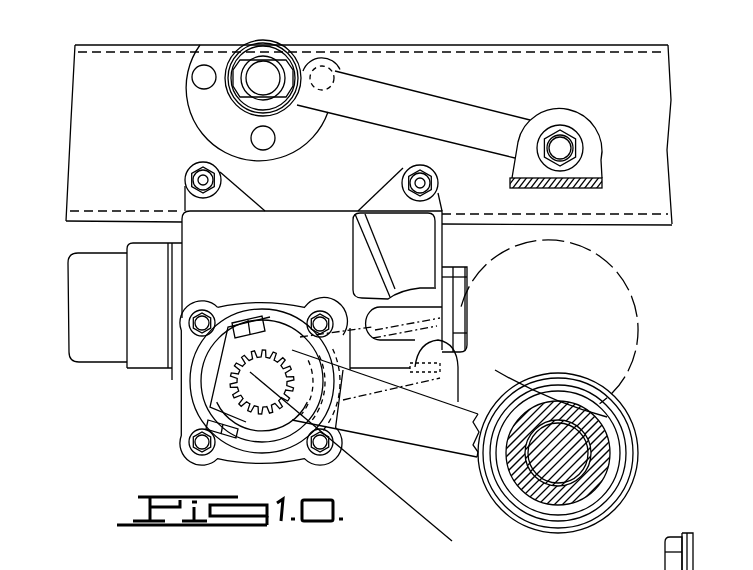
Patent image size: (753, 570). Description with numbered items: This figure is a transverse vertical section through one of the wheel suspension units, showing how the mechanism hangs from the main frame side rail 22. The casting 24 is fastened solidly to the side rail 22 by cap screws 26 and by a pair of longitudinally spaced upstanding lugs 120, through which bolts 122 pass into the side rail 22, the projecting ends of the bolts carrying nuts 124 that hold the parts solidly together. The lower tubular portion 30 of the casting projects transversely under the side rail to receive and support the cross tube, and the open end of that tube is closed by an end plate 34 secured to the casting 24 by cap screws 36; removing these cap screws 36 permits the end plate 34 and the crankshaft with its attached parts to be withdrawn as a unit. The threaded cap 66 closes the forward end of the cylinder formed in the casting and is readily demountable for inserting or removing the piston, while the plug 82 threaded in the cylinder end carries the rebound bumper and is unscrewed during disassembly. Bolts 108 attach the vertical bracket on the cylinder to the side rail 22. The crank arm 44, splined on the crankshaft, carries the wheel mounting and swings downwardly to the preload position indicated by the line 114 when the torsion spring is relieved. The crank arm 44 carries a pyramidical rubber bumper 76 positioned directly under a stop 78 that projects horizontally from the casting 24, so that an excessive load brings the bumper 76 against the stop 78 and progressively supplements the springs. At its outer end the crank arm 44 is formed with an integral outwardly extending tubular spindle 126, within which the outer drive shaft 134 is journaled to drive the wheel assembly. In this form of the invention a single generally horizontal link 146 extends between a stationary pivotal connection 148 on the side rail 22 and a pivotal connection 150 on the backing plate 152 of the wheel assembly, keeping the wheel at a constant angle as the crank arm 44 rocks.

The main frame side rail 22 is at (418, 52).
The casting 24 is at (291, 207).
The cap screws 26 is at (250, 249).
The lower tubular portion 30 is at (185, 400).
The end plate 34 is at (200, 345).
The cap screws 36 is at (203, 316).
The crank arm 44 is at (388, 435).
The threaded cap 66 is at (86, 280).
The rubber bumper 76 is at (450, 380).
The stop 78 is at (415, 262).
The plug 82 is at (468, 279).
The bolts 108 is at (664, 552).
The line 114 is at (372, 463).
The lugs 120 is at (183, 201).
The bolts 122 is at (193, 178).
The nuts 124 is at (200, 162).
The tubular spindle 126 is at (632, 434).
The outer drive shaft 134 is at (573, 462).
The link 146 is at (425, 104).
The stationary pivotal connection 148 is at (260, 62).
The pivotal connection 150 is at (583, 112).
The backing plate 152 is at (585, 172).